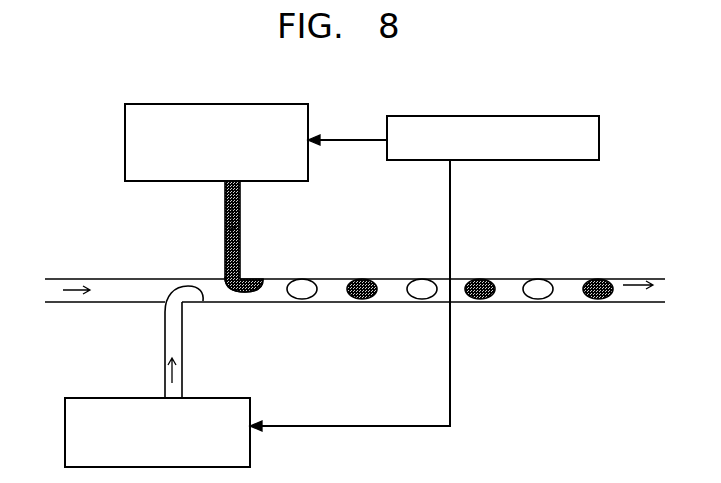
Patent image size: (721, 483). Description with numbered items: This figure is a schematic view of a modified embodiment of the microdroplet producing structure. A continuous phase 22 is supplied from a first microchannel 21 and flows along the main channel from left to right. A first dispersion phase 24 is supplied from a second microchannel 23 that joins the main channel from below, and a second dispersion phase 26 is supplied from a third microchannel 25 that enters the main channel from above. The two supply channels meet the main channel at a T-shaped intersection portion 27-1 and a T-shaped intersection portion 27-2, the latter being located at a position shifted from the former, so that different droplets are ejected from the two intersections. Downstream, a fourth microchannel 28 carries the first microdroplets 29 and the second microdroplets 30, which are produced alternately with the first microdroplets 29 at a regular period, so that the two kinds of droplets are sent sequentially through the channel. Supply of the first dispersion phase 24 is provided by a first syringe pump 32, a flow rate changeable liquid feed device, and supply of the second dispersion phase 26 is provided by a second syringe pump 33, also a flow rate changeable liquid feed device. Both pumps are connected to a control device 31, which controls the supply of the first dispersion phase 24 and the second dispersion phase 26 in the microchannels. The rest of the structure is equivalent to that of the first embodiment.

The first microchannel 21 is at (60, 278).
The continuous phase 22 is at (80, 282).
The second microchannel 23 is at (183, 350).
The first dispersion phase 24 is at (183, 372).
The third microchannel 25 is at (242, 232).
The second dispersion phase 26 is at (242, 213).
The T-shaped intersection portion 27-1 is at (168, 292).
The T-shaped intersection portion 27-2 is at (235, 289).
The fourth microchannel 28 is at (406, 277).
The first microdroplet 29 is at (305, 277).
The second microdroplet 30 is at (362, 277).
The control device 31 is at (600, 132).
The first syringe pump 32 is at (252, 413).
The second syringe pump 33 is at (308, 128).